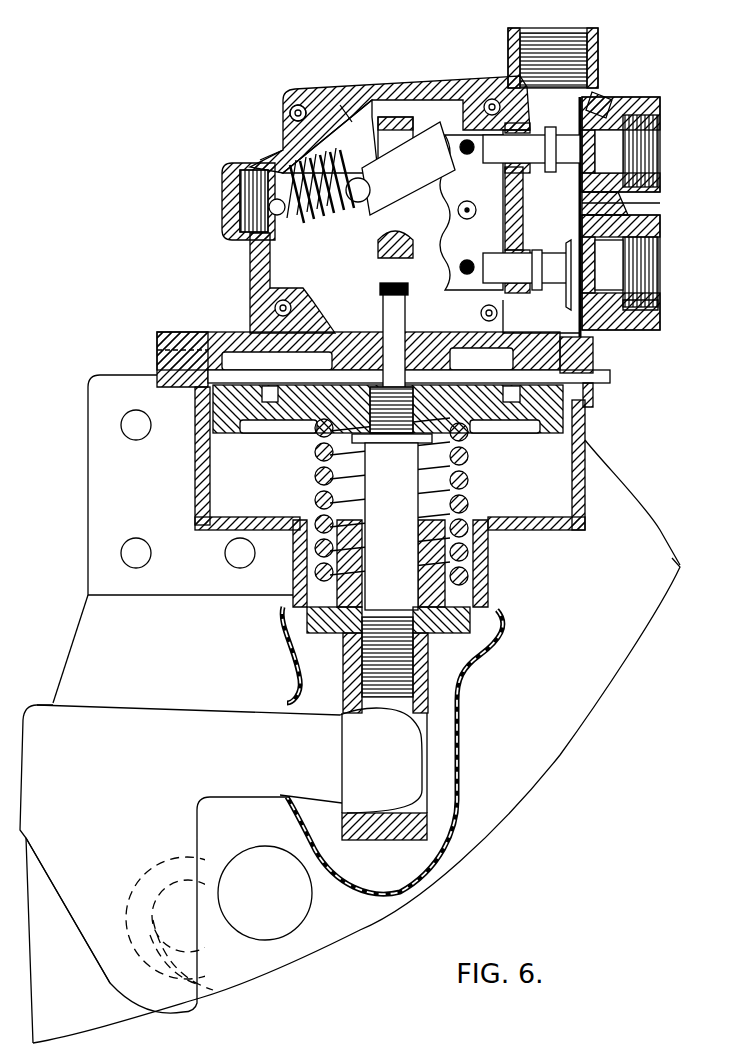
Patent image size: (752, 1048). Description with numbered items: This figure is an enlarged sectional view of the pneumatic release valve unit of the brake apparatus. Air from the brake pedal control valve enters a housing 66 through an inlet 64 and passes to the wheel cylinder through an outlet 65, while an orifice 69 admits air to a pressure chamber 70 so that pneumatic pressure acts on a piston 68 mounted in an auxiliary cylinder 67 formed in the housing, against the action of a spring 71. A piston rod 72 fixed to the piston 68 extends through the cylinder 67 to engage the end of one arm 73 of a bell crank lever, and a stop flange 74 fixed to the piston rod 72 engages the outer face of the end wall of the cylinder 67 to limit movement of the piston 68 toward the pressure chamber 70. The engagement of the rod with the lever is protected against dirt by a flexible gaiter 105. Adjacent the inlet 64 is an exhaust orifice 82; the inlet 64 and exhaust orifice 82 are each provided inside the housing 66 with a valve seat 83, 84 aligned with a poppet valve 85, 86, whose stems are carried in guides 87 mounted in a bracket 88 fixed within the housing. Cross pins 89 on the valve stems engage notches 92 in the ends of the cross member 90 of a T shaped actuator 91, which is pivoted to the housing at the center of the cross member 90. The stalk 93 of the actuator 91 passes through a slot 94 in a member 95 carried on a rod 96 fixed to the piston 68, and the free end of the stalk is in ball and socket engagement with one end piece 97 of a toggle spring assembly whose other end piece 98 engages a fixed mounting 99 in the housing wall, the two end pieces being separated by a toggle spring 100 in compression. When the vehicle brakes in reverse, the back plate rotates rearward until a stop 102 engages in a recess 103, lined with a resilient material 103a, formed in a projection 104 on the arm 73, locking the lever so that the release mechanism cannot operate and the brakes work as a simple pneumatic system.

The inlet 64 is at (650, 297).
The outlet 65 is at (562, 30).
The housing 66 is at (253, 292).
The auxiliary cylinder 67 is at (582, 497).
The piston 68 is at (573, 400).
The orifice 69 is at (565, 350).
The pressure chamber 70 is at (257, 377).
The spring 71 is at (470, 487).
The piston rod 72 is at (400, 577).
The arm 73 is at (80, 717).
The stop flange 74 is at (485, 648).
The exhaust orifice 82 is at (643, 143).
The valve seat 83 is at (643, 250).
The valve seat 84 is at (603, 108).
The poppet valve 85 is at (552, 275).
The poppet valve 86 is at (595, 93).
The guides 87 is at (527, 167).
The bracket 88 is at (585, 209).
The cross pins 89 is at (455, 100).
The cross member 90 is at (390, 140).
The T shaped actuator 91 is at (375, 165).
The notches 92 is at (447, 180).
The stalk 93 is at (340, 105).
The slot 94 is at (355, 175).
The member 95 is at (377, 243).
The rod 96 is at (385, 317).
The end piece 97 is at (290, 108).
The end piece 98 is at (268, 182).
The fixed mounting 99 is at (224, 190).
The toggle spring 100 is at (273, 140).
The stop 102 is at (292, 917).
The recess 103 is at (200, 945).
The resilient material 103a is at (213, 990).
The projection 104 is at (103, 967).
The flexible gaiter 105 is at (460, 807).